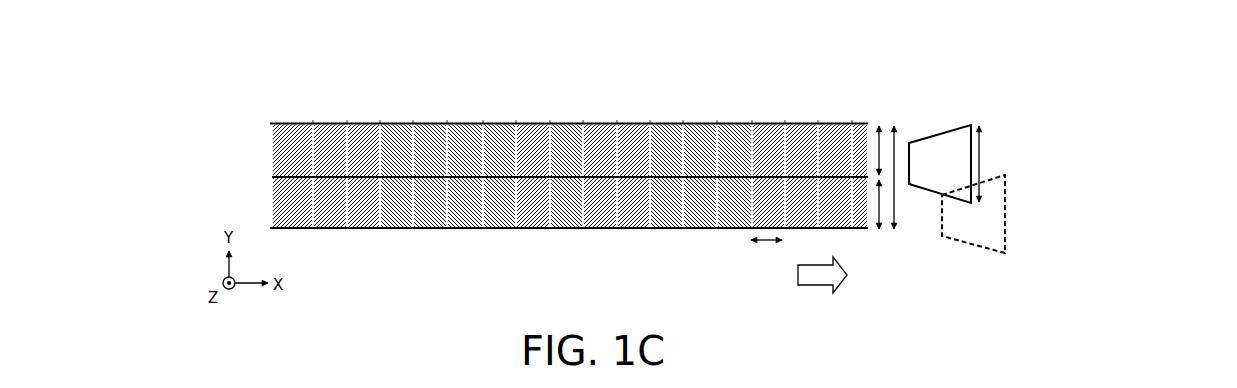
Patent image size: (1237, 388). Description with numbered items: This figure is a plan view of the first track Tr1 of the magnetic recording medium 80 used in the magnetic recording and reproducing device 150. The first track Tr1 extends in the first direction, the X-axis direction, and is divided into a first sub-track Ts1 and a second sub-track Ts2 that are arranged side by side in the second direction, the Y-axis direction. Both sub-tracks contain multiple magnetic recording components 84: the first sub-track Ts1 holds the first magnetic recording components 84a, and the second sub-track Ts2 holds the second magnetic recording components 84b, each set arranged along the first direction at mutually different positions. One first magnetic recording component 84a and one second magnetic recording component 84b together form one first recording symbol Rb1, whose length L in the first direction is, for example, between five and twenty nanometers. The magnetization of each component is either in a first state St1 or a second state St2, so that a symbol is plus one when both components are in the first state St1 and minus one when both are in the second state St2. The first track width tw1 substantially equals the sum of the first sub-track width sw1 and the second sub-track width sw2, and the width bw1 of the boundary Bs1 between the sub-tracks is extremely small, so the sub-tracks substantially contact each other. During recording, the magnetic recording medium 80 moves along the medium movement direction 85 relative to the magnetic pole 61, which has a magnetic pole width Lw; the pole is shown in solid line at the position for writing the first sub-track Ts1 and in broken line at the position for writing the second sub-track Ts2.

The magnetic recording medium 80 is at (319, 72).
The magnetic recording components 84 is at (361, 142).
The first magnetic recording components 84a is at (633, 145).
The second magnetic recording components 84b is at (635, 207).
The first state St1 is at (287, 140).
The second state St2 is at (388, 142).
The first track Tr1 is at (226, 133).
The first sub-track Ts1 is at (290, 153).
The second sub-track Ts2 is at (290, 200).
The boundary Bs1 is at (430, 179).
The first recording symbols Rb1 is at (692, 280).
The length L is at (766, 259).
The medium movement direction 85 is at (817, 277).
The magnetic recording and reproducing device 150 is at (950, 46).
The magnetic pole 61 is at (940, 136).
The first sub-track width sw1 is at (877, 172).
The second sub-track width sw2 is at (878, 201).
The width of boundary bw1 is at (895, 172).
The magnetic pole width Lw is at (981, 152).
The first track width tw1 is at (896, 232).